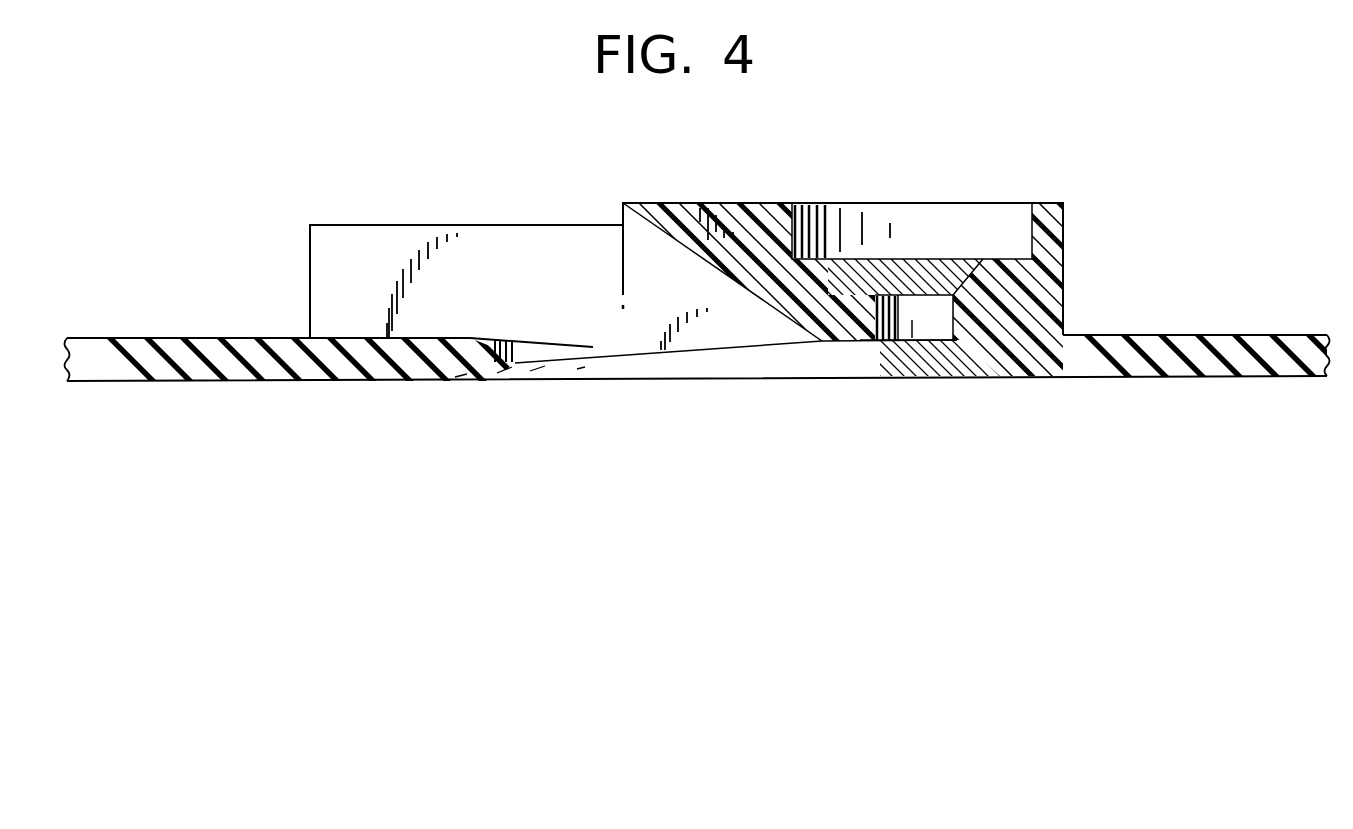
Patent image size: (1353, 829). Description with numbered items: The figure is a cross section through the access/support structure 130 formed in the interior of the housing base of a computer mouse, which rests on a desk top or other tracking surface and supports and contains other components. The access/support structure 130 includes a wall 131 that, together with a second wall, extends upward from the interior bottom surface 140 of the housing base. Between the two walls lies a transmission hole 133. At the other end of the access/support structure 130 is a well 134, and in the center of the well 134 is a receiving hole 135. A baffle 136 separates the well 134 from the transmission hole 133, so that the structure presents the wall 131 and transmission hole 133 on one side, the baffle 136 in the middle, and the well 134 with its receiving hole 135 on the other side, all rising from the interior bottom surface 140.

The access/support structure 130 is at (775, 246).
The wall 131 is at (380, 225).
The transmission hole 133 is at (508, 378).
The well 134 is at (983, 263).
The receiving hole 135 is at (885, 300).
The baffle 136 is at (704, 226).
The interior bottom surface 140 is at (172, 338).